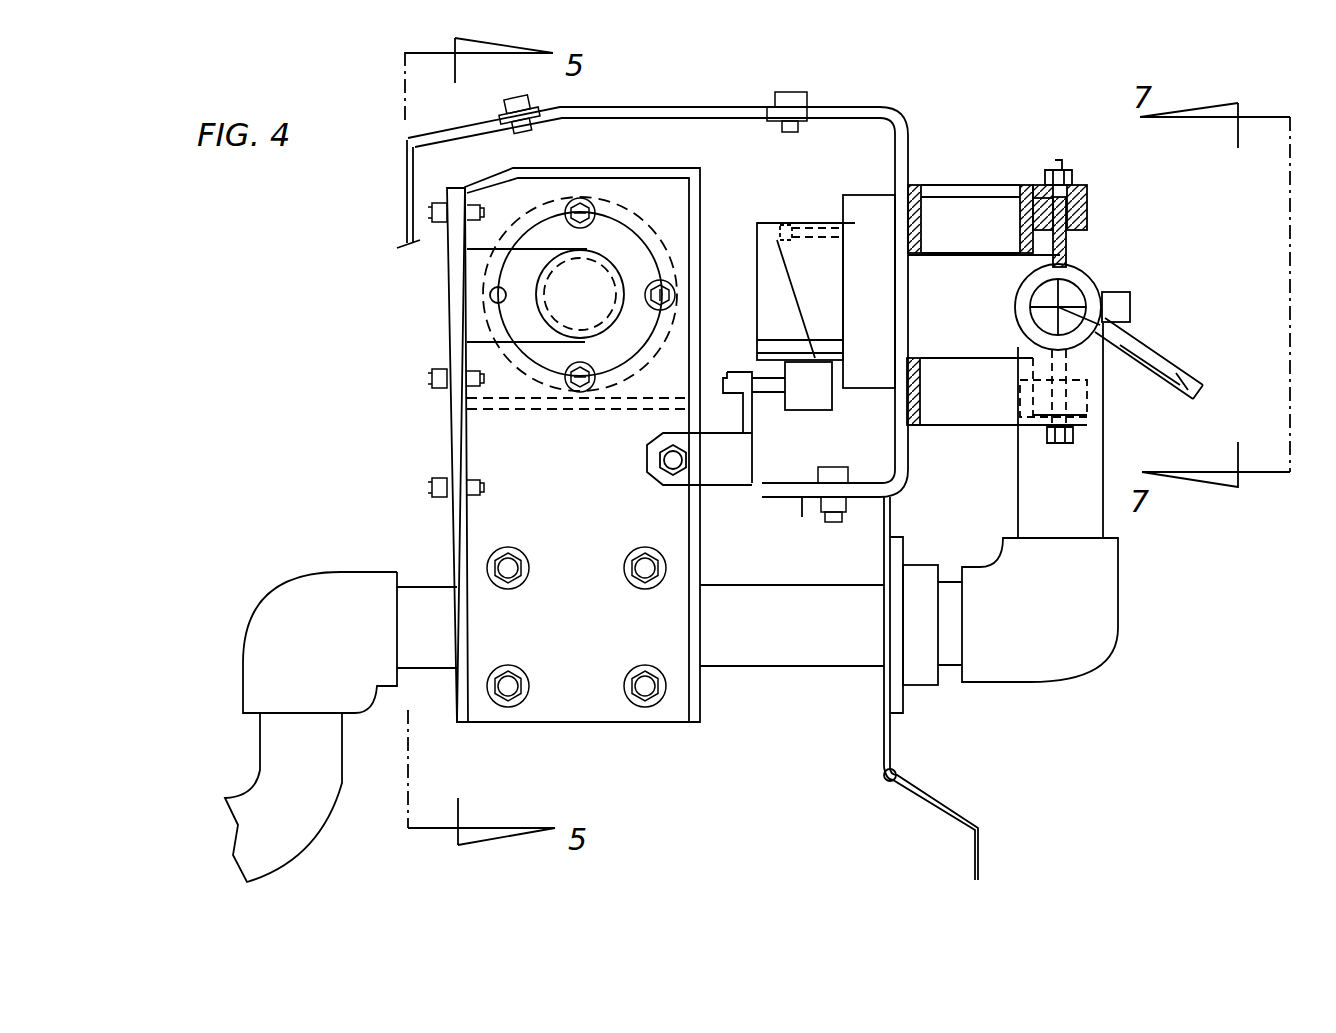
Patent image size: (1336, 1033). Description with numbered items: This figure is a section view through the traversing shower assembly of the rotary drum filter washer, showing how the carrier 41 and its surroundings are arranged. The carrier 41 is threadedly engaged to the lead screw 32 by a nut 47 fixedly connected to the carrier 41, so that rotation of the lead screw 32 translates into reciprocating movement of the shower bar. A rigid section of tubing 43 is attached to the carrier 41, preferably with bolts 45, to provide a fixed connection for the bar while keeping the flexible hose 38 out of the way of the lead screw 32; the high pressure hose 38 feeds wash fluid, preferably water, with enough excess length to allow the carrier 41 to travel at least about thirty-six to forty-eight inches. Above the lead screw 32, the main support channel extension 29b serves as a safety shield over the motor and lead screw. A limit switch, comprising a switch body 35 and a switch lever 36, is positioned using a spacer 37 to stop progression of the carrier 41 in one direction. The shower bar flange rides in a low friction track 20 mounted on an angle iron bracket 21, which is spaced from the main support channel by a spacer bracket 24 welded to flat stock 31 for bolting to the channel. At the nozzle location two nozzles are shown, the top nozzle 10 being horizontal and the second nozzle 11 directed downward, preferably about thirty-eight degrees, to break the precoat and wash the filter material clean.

The nozzle 10 is at (1027, 262).
The nozzle 11 is at (1146, 376).
The track 20 is at (1088, 215).
The angle iron bracket 21 is at (1082, 185).
The spacer bracket 24 is at (908, 122).
The channel extension 29b is at (622, 108).
The flat stock 31 is at (915, 193).
The lead screw 32 is at (597, 275).
The switch body 35 is at (781, 228).
The switch lever 36 is at (752, 418).
The spacer 37 is at (869, 268).
The flexible hose 38 is at (275, 766).
The carrier 41 is at (492, 443).
The tubing 43 is at (780, 648).
The bolts 45 is at (522, 700).
The nut 47 is at (540, 315).